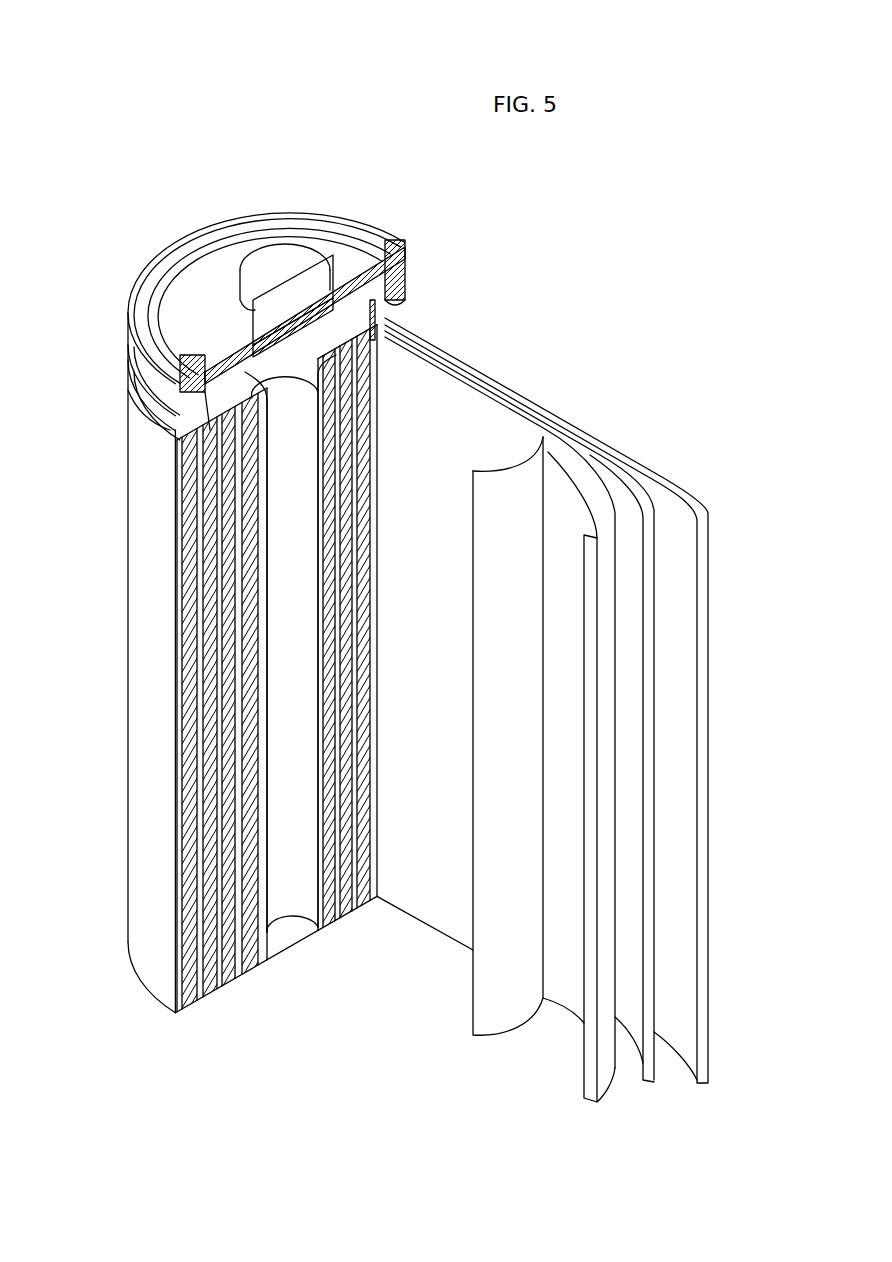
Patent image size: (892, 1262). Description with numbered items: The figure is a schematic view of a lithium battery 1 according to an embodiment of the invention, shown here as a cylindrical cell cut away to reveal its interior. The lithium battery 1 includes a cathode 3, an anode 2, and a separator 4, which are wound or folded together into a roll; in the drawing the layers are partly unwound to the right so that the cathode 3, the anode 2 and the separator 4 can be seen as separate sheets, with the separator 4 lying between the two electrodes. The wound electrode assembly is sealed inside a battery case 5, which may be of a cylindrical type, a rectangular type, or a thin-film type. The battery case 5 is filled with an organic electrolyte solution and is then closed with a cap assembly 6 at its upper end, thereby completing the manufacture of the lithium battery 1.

The lithium battery 1 is at (563, 235).
The anode 2 is at (682, 480).
The cathode 3 is at (603, 478).
The separator 4 is at (508, 473).
The battery case 5 is at (135, 661).
The cap assembly 6 is at (260, 258).